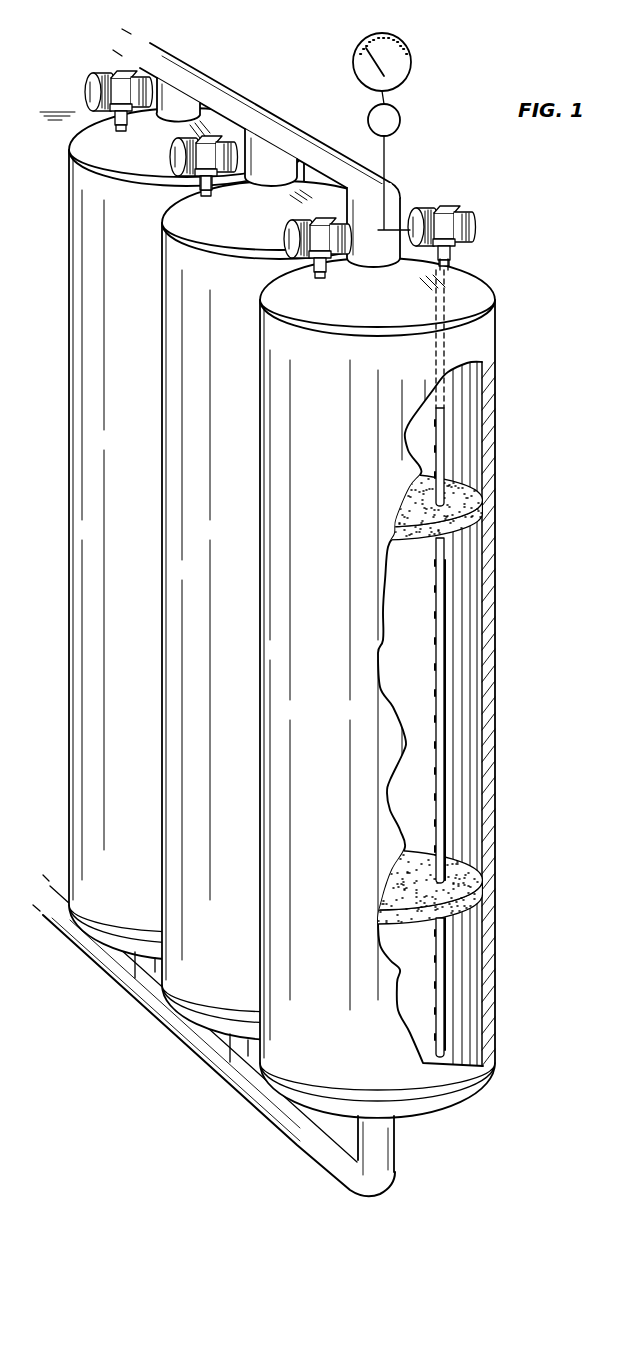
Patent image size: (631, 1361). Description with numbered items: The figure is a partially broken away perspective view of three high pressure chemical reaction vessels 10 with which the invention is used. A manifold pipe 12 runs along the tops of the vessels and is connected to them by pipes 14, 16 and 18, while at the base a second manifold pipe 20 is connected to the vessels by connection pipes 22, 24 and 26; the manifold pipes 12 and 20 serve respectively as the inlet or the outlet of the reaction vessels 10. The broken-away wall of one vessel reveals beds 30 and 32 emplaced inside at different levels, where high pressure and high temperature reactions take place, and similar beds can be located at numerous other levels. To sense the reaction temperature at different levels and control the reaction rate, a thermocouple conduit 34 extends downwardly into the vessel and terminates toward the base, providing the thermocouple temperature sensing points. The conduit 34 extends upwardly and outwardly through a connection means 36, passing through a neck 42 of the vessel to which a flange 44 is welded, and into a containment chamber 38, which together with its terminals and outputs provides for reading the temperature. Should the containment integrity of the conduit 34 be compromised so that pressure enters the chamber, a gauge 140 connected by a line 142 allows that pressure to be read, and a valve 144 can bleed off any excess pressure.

The high pressure chemical reaction vessel 10 is at (134, 358).
The manifold pipe 12 is at (300, 60).
The pipe 14 is at (176, 106).
The pipe 16 is at (262, 165).
The pipe 18 is at (390, 258).
The second manifold pipe 20 is at (190, 1058).
The connection pipe 22 is at (384, 1138).
The connection pipe 24 is at (250, 1050).
The connection pipe 26 is at (150, 977).
The bed 30 is at (462, 492).
The bed 32 is at (466, 872).
The thermocouple conduit 34 is at (450, 601).
The connection means 36 is at (462, 250).
The containment chamber 38 is at (505, 168).
The neck 42 is at (212, 187).
The flange 44 is at (205, 183).
The gauge 140 is at (411, 53).
The line 142 is at (388, 150).
The valve 144 is at (401, 107).